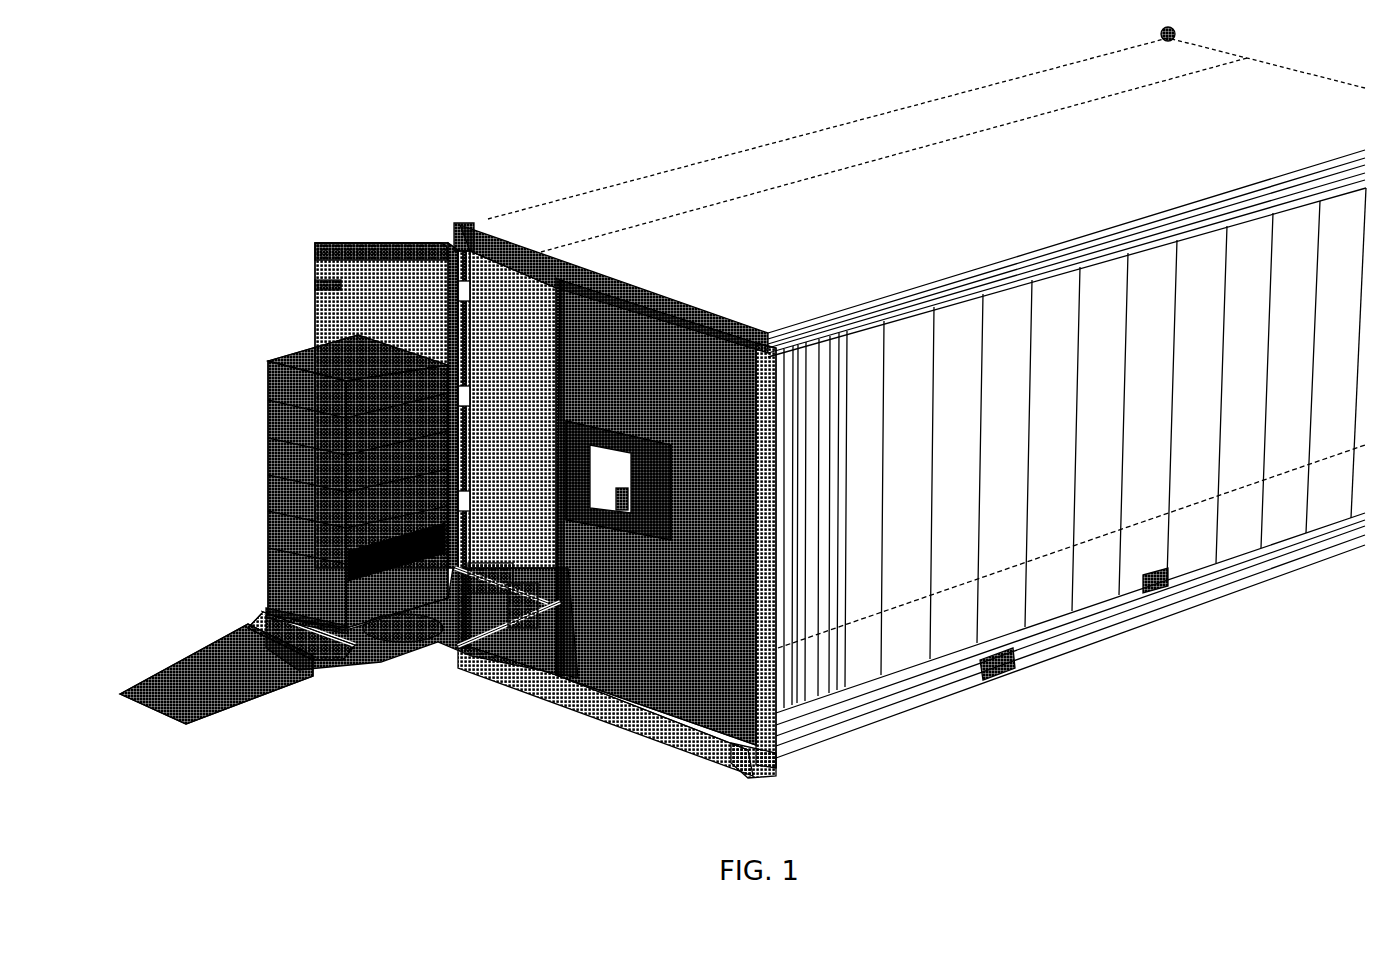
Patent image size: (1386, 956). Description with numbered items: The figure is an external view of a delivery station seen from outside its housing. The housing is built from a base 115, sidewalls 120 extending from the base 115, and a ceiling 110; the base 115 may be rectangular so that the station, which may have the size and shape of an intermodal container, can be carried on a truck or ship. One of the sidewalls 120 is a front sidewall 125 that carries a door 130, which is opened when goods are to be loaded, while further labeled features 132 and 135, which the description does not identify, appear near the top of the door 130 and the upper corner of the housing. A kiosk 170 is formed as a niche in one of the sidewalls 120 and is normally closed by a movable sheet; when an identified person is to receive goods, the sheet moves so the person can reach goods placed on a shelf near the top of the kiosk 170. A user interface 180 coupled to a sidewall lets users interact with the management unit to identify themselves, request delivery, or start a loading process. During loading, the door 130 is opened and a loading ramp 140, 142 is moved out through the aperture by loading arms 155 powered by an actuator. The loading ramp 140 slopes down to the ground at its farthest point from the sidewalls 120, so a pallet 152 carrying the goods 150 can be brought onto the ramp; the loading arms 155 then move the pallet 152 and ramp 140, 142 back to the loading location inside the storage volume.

The ceiling 110 is at (608, 186).
The base 115 is at (598, 703).
The sidewalls 120 is at (1147, 570).
The front sidewall 125 is at (690, 715).
The door 130 is at (318, 294).
The door top edge 132 is at (346, 233).
The corner fitting 135 is at (460, 214).
The loading ramp 140 is at (230, 692).
The loading ramp 142 is at (378, 660).
The goods 150 is at (262, 545).
The pallet 152 is at (258, 582).
The loading arms 155 is at (452, 656).
The kiosk 170 is at (607, 479).
The user interface 180 is at (648, 455).